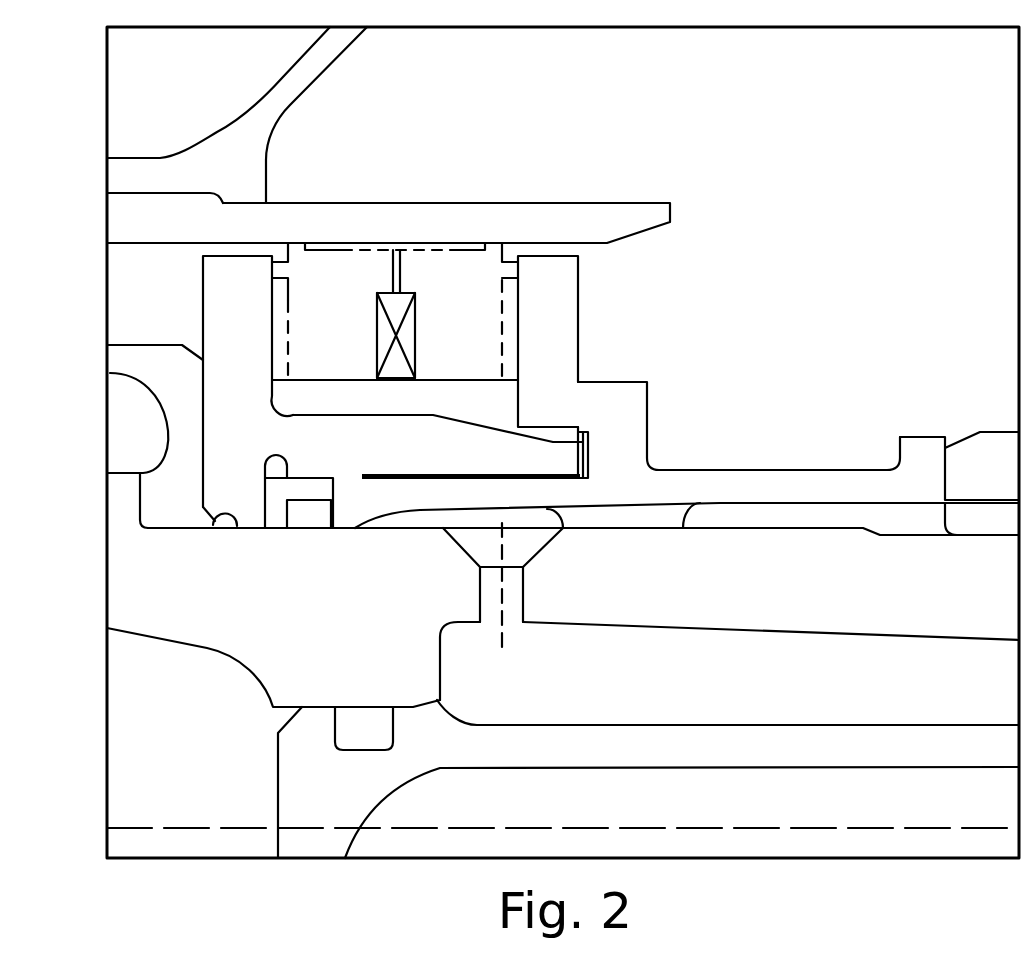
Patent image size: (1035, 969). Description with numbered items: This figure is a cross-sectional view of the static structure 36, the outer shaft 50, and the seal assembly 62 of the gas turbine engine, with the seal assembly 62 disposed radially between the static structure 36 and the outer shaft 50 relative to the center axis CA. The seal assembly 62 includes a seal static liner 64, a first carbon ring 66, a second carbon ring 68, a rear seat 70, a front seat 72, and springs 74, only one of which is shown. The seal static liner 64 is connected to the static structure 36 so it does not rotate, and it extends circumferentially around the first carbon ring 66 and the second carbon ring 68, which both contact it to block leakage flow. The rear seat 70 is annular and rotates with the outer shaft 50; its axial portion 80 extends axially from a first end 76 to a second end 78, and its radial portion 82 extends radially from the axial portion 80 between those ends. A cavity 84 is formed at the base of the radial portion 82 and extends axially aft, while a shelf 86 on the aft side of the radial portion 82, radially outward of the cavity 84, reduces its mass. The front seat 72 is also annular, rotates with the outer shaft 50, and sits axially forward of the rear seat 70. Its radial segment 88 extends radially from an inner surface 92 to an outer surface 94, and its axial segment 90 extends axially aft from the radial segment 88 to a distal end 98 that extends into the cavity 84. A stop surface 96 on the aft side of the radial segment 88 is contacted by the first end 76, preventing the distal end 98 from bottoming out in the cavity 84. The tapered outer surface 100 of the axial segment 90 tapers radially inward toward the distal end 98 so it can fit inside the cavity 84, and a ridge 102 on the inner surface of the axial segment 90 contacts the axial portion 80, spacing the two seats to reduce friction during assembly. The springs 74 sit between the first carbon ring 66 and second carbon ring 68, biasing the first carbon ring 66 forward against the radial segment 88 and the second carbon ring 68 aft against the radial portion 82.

The static structure 36 is at (292, 85).
The outer shaft 50 is at (788, 598).
The seal assembly 62 is at (744, 322).
The seal static liner 64 is at (553, 222).
The first carbon ring 66 is at (313, 273).
The second carbon ring 68 is at (448, 273).
The rear seat 70 is at (650, 458).
The front seat 72 is at (253, 411).
The springs 74 is at (418, 325).
The first end 76 is at (277, 512).
The second end 78 is at (940, 470).
The axial portion 80 is at (780, 483).
The radial portion 82 is at (552, 313).
The cavity 84 is at (586, 433).
The shelf 86 is at (612, 380).
The radial segment 88 is at (215, 343).
The axial segment 90 is at (365, 445).
The inner surface 92 is at (217, 520).
The outer surface 94 is at (230, 256).
The stop surface 96 is at (263, 503).
The distal end 98 is at (572, 458).
The tapered outer surface 100 is at (476, 415).
The ridge 102 is at (307, 472).
The center axis CA is at (927, 827).